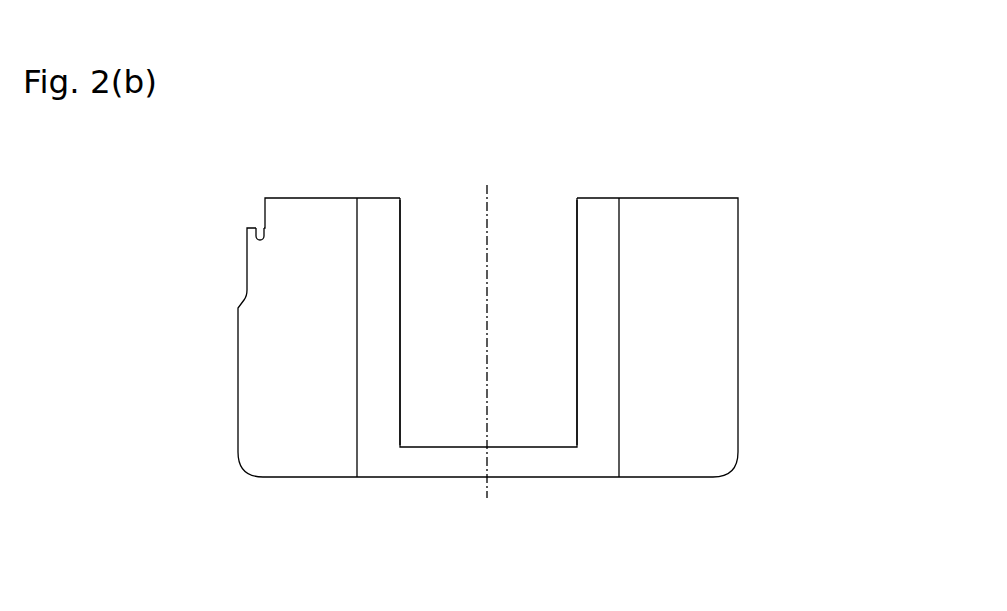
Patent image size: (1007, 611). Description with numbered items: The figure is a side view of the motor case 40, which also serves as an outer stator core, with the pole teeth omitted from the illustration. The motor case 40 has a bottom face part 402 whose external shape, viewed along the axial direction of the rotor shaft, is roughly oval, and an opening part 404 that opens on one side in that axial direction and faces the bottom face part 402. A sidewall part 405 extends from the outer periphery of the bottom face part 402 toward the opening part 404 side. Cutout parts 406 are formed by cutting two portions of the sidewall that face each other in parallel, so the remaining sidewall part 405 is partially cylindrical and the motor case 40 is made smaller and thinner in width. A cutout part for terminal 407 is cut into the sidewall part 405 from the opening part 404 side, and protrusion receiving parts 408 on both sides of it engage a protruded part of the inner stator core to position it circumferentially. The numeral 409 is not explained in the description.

The motor case 40 is at (737, 111).
The bottom face part 402 is at (420, 477).
The opening part 404 is at (516, 159).
The sidewall part 405 is at (715, 328).
The cutout part 406 is at (562, 313).
The cutout part for terminal 407 is at (241, 297).
The protrusion receiving part 408 is at (255, 228).
The groove side wall 409 is at (402, 216).